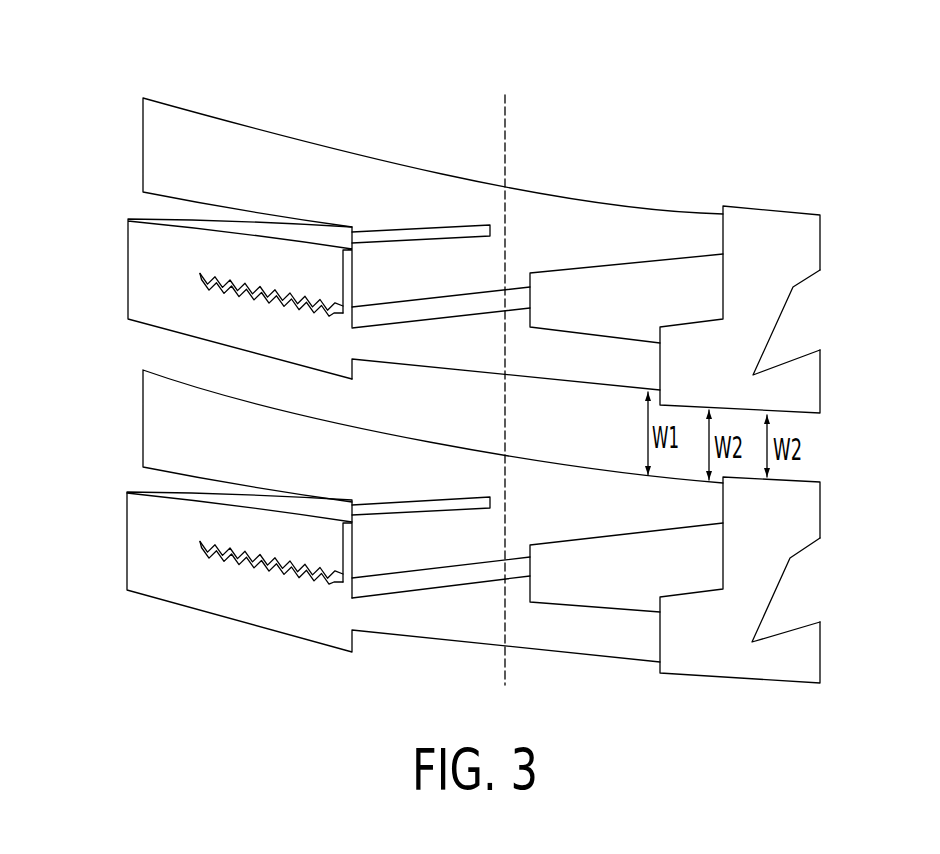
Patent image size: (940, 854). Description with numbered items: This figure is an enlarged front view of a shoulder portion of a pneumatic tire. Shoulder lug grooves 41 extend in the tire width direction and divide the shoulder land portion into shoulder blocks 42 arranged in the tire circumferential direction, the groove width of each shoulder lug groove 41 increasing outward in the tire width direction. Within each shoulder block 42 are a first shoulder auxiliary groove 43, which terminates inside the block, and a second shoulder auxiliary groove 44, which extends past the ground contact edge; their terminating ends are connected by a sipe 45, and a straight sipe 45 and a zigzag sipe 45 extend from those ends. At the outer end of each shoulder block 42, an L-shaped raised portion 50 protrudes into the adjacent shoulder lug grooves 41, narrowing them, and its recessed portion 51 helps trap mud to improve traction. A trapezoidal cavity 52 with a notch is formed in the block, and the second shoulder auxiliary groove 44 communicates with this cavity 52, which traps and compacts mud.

The shoulder lug groove 41 is at (207, 370).
The shoulder block 42 is at (165, 167).
The first shoulder auxiliary groove 43 is at (228, 222).
The second shoulder auxiliary groove 44 is at (462, 303).
The sipe 45 is at (427, 227).
The raised portion 50 is at (797, 253).
The recessed portion 51 is at (790, 330).
The cavity 52 is at (627, 293).